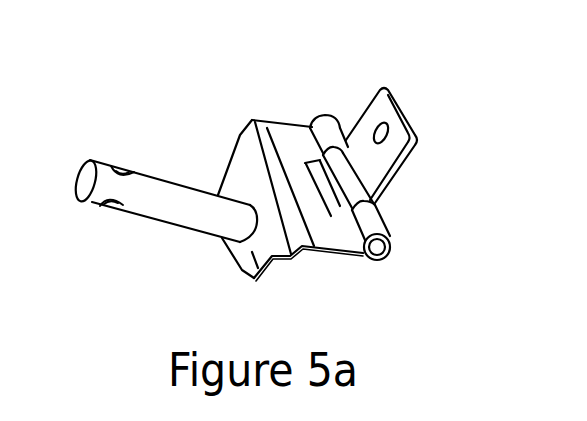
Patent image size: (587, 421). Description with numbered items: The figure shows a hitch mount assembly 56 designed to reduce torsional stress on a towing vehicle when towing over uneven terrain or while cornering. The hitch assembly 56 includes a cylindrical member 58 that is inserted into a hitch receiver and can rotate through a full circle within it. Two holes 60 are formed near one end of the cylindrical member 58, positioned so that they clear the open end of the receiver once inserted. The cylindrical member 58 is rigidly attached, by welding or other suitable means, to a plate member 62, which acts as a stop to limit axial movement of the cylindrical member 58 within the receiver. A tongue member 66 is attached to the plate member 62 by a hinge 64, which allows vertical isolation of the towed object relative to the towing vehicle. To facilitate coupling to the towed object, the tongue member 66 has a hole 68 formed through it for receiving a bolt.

The hitch assembly 56 is at (282, 86).
The cylindrical member 58 is at (160, 224).
The holes 60 is at (122, 168).
The plate member 62 is at (259, 279).
The hinge 64 is at (389, 228).
The tongue member 66 is at (363, 107).
The hole 68 is at (385, 129).